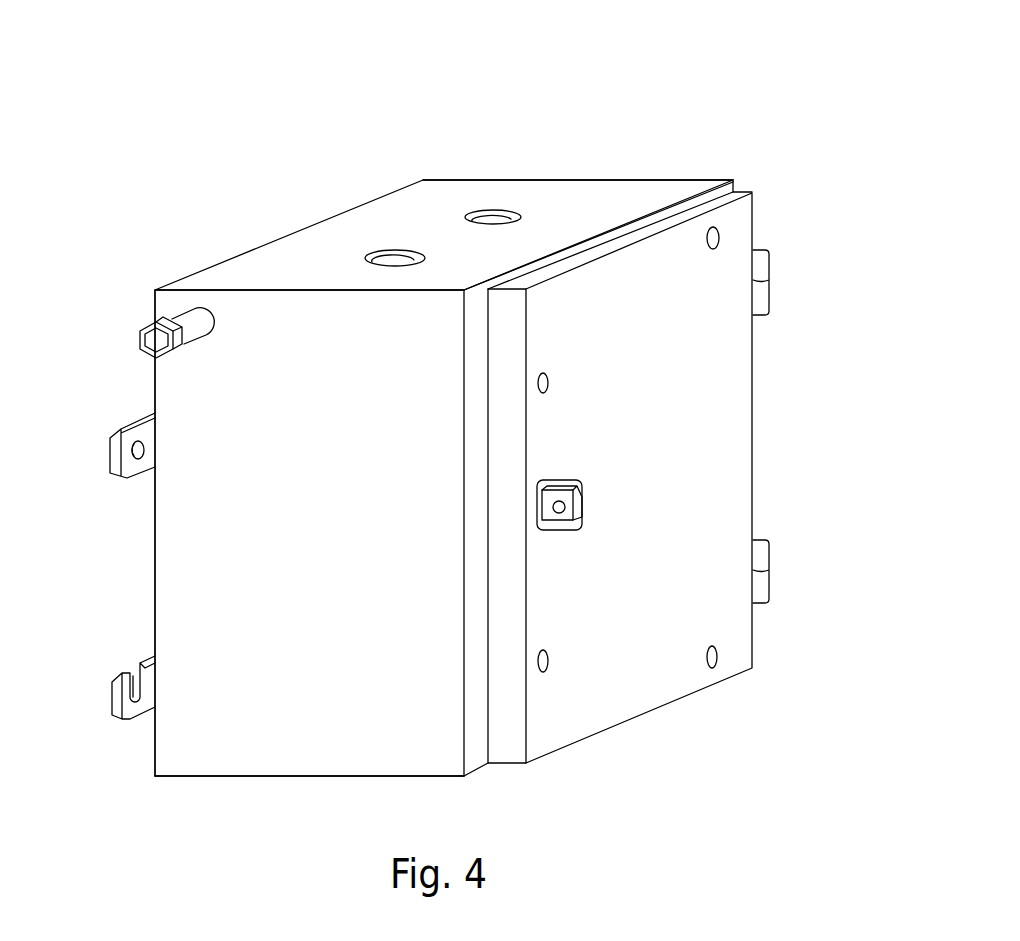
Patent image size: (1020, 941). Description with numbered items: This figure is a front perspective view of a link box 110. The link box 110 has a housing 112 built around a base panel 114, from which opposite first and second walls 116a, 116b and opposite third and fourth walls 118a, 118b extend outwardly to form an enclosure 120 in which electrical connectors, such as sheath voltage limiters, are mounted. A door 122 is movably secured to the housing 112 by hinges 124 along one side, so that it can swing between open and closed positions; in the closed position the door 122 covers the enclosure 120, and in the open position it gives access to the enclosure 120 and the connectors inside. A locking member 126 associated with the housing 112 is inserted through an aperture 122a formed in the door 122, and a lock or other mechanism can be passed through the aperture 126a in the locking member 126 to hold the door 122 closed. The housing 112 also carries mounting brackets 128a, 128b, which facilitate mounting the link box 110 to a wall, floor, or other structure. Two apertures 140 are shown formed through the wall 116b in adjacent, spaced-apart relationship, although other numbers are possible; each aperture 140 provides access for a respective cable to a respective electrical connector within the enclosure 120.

The link box 110 is at (664, 92).
The housing 112 is at (716, 172).
The base panel 114 is at (155, 580).
The first wall 116a is at (407, 216).
The second wall 116b is at (252, 780).
The third wall 118a is at (588, 180).
The fourth wall 118b is at (328, 529).
The enclosure 120 is at (612, 208).
The door 122 is at (732, 425).
The aperture 122a is at (553, 484).
The hinges 124 is at (770, 264).
The locking member 126 is at (570, 522).
The aperture 126a is at (562, 512).
The mounting bracket 128a is at (128, 422).
The mounting bracket 128b is at (112, 716).
The apertures 140 is at (375, 254).